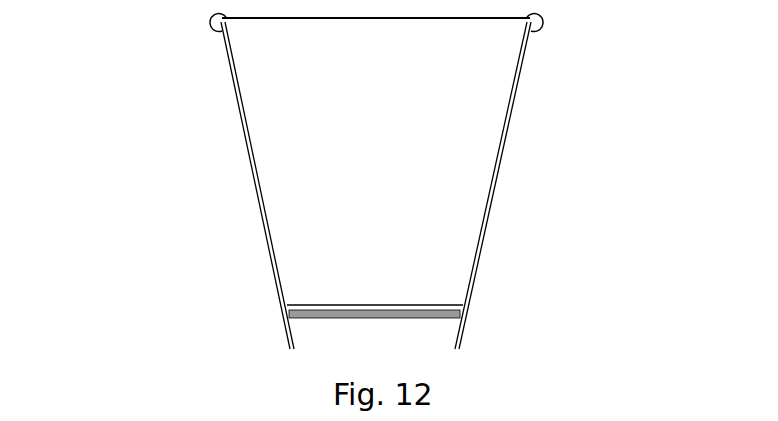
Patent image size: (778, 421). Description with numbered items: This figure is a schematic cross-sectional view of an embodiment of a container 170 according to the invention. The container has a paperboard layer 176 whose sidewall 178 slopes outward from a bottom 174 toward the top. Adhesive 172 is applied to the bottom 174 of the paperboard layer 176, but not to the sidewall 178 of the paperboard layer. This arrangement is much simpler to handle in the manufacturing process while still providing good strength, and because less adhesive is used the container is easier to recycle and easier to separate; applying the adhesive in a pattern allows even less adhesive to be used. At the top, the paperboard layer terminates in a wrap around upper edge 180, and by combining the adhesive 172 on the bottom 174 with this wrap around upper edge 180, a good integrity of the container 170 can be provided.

The container 170 is at (192, 138).
The adhesive 172 is at (443, 305).
The bottom 174 is at (353, 318).
The paperboard layer 176 is at (265, 258).
The sidewall 178 is at (502, 173).
The wrap around upper edge 180 is at (556, 21).